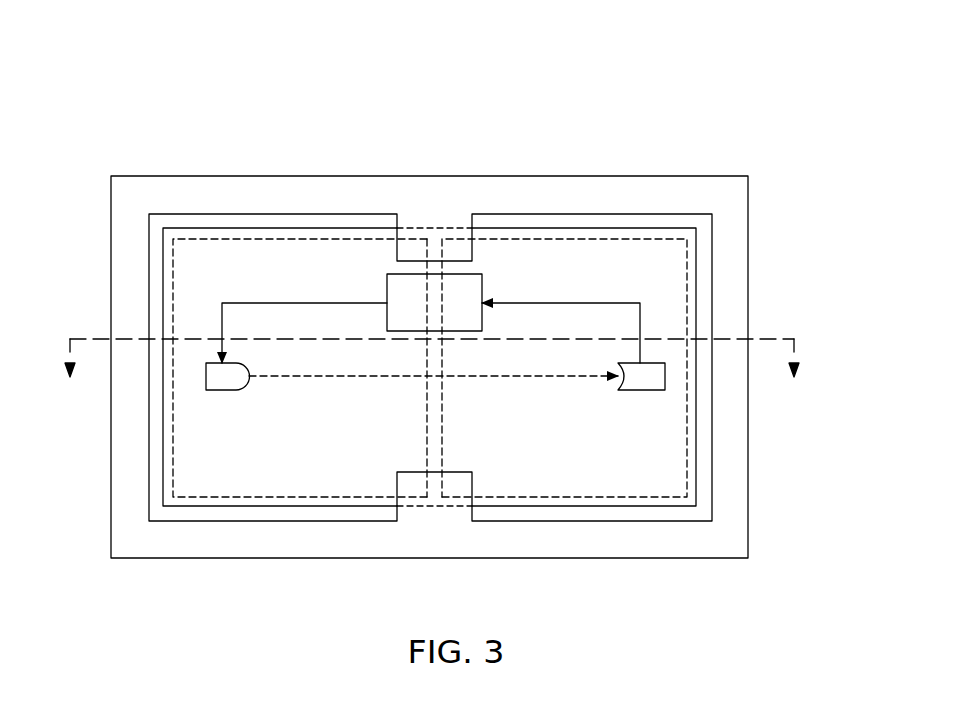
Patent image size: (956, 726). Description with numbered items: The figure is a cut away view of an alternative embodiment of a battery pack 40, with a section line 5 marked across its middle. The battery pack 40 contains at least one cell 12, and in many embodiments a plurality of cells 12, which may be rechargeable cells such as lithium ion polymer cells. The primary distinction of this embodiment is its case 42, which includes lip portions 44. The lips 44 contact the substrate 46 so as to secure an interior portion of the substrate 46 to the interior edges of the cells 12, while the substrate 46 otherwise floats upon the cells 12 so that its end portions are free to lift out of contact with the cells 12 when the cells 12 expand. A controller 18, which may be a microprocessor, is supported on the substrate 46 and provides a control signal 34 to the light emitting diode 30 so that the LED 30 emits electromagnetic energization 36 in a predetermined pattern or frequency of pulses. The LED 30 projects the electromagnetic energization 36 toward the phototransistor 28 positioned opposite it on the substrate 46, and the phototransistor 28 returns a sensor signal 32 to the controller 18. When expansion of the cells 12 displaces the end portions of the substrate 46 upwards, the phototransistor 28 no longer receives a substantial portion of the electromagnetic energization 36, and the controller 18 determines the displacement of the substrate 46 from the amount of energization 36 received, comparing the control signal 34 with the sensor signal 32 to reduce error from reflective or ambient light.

The battery pack 40 is at (722, 97).
The cell 12 is at (290, 270).
The case 42 is at (525, 195).
The substrate 46 is at (610, 228).
The lip portions 44 is at (434, 222).
The controller 18 is at (482, 285).
The control signal 34 is at (275, 302).
The sensor signal 32 is at (592, 303).
The light emitting diode 30 is at (228, 376).
The electromagnetic energization 36 is at (337, 377).
The phototransistor 28 is at (643, 391).
The section line 5- 5 is at (431, 372).